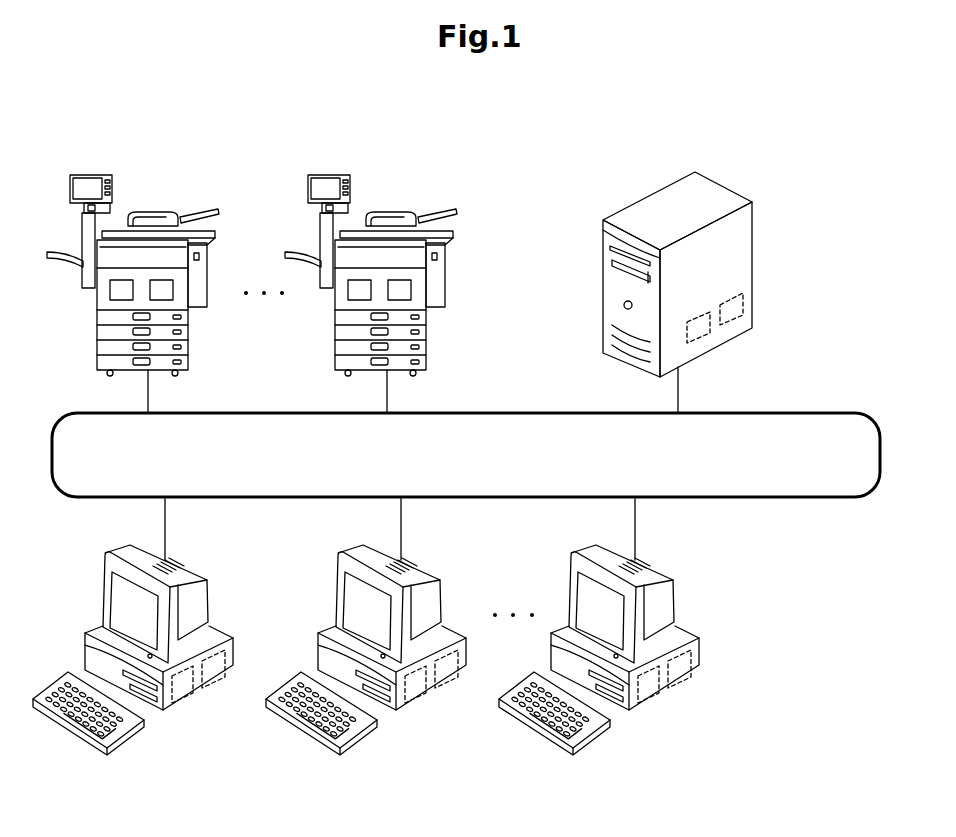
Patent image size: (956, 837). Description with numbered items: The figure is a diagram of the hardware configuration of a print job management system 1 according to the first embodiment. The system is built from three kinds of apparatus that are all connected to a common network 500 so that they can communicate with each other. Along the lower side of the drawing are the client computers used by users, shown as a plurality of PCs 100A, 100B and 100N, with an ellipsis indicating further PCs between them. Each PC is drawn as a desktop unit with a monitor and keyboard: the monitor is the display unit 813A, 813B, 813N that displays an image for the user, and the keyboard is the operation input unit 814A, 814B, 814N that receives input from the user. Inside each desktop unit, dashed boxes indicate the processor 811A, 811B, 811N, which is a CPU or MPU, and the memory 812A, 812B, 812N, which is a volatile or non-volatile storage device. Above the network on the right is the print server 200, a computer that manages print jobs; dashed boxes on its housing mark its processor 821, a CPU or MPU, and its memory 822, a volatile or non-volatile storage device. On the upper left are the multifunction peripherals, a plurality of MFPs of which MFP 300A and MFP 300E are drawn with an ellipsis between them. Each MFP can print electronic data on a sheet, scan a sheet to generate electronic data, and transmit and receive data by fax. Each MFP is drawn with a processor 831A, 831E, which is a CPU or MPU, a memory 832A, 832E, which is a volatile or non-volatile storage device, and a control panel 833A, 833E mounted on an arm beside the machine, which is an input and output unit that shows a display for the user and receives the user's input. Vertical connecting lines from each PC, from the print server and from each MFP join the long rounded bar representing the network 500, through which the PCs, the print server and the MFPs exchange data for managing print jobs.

The print job management system 1 is at (796, 118).
The PC 100A is at (151, 662).
The PC 100B is at (387, 662).
The PC 100N is at (619, 662).
The print server 200 is at (704, 287).
The MFP 300A is at (163, 260).
The MFP 300E is at (392, 260).
The network 500 is at (857, 413).
The processor 811A is at (192, 692).
The processor 811B is at (414, 711).
The processor 811N is at (642, 711).
The memory 812A is at (225, 670).
The memory 812B is at (455, 692).
The memory 812N is at (686, 692).
The display unit 813A is at (202, 603).
The display unit 813B is at (422, 604).
The display unit 813N is at (653, 604).
The operation input unit 814A is at (97, 748).
The operation input unit 814B is at (321, 739).
The operation input unit 814N is at (554, 739).
The processor 821 is at (700, 343).
The memory 822 is at (737, 316).
The processor 831A is at (118, 293).
The processor 831E is at (322, 302).
The memory 832A is at (177, 284).
The memory 832E is at (439, 276).
The control panel 833A is at (83, 174).
The control panel 833E is at (355, 178).